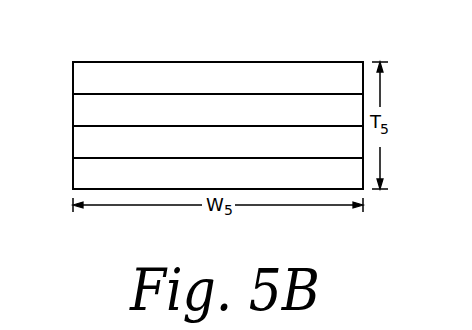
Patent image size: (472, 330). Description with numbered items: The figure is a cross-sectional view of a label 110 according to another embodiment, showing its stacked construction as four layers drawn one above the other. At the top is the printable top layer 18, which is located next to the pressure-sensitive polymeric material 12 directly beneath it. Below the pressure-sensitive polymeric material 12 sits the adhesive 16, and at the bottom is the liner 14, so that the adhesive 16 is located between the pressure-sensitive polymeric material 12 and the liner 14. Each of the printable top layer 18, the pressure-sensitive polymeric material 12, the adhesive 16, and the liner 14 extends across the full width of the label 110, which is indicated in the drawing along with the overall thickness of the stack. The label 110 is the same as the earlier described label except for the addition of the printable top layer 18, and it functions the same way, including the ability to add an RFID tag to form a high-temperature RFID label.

The label 110 is at (95, 235).
The printable top layer 18 is at (210, 86).
The pressure-sensitive polymeric material 12 is at (210, 120).
The adhesive 16 is at (210, 151).
The liner 14 is at (210, 183).